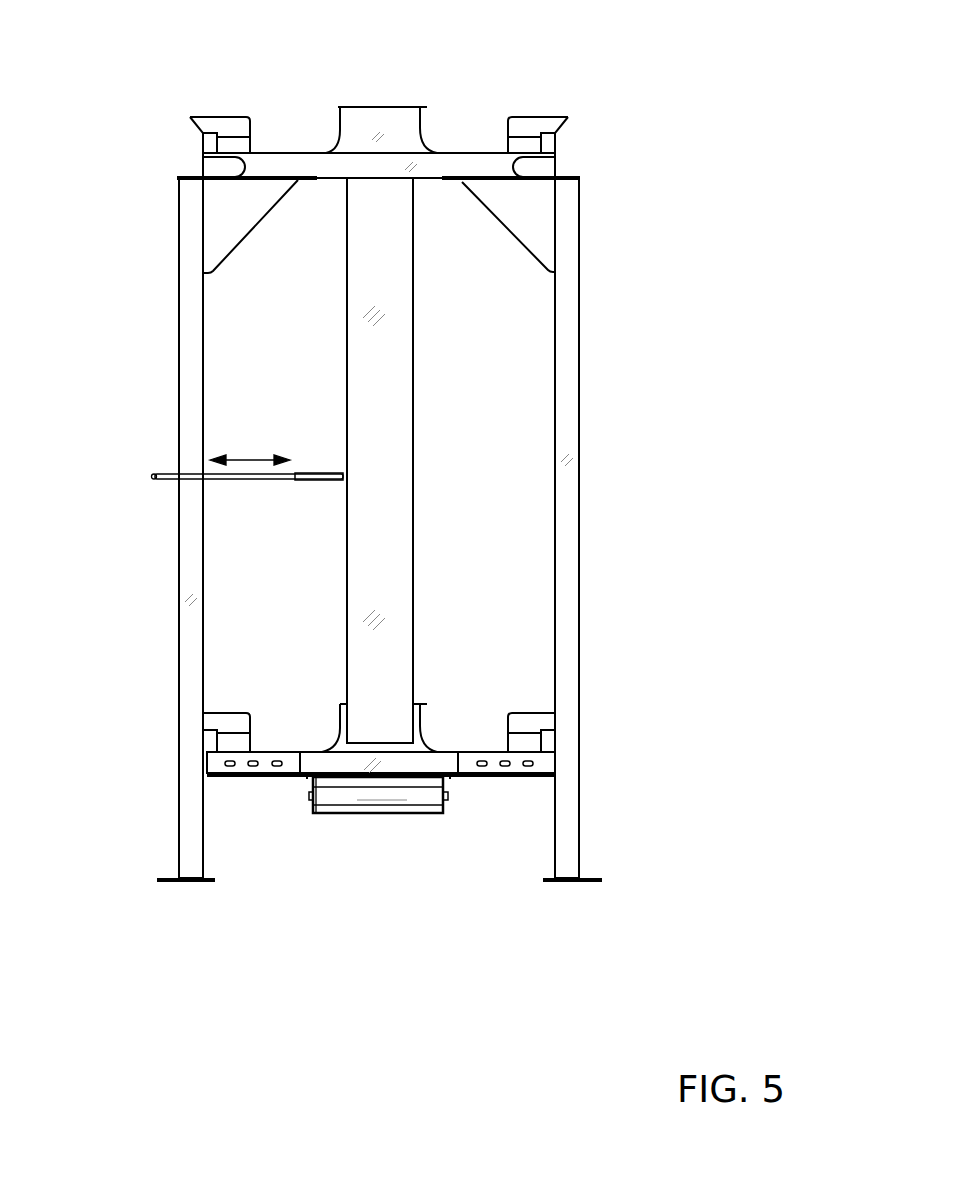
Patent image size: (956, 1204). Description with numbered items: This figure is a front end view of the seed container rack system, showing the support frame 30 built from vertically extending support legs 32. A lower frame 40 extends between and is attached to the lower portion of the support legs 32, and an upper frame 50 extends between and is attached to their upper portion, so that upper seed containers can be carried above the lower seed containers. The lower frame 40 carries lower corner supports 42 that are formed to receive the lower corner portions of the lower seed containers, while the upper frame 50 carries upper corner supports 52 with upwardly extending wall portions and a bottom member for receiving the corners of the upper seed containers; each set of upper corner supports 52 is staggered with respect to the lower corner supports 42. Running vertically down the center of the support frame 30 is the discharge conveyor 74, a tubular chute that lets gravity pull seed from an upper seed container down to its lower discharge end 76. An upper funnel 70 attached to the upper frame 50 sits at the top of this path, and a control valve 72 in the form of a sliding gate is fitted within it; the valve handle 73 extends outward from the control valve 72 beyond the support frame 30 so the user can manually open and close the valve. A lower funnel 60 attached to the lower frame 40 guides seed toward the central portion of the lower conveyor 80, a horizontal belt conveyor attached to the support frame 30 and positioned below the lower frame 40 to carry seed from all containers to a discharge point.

The support frame 30 is at (398, 529).
The support legs 32 is at (180, 491).
The lower frame 40 is at (265, 786).
The lower corner supports 42 is at (228, 722).
The upper frame 50 is at (570, 160).
The upper corner supports 52 is at (192, 118).
The lower funnel 60 is at (423, 720).
The upper funnel 70 is at (383, 107).
The control valve 72 is at (320, 480).
The valve handle 73 is at (209, 479).
The discharge conveyor 74 is at (413, 422).
The lower discharge end 76 is at (390, 743).
The lower conveyor 80 is at (373, 812).